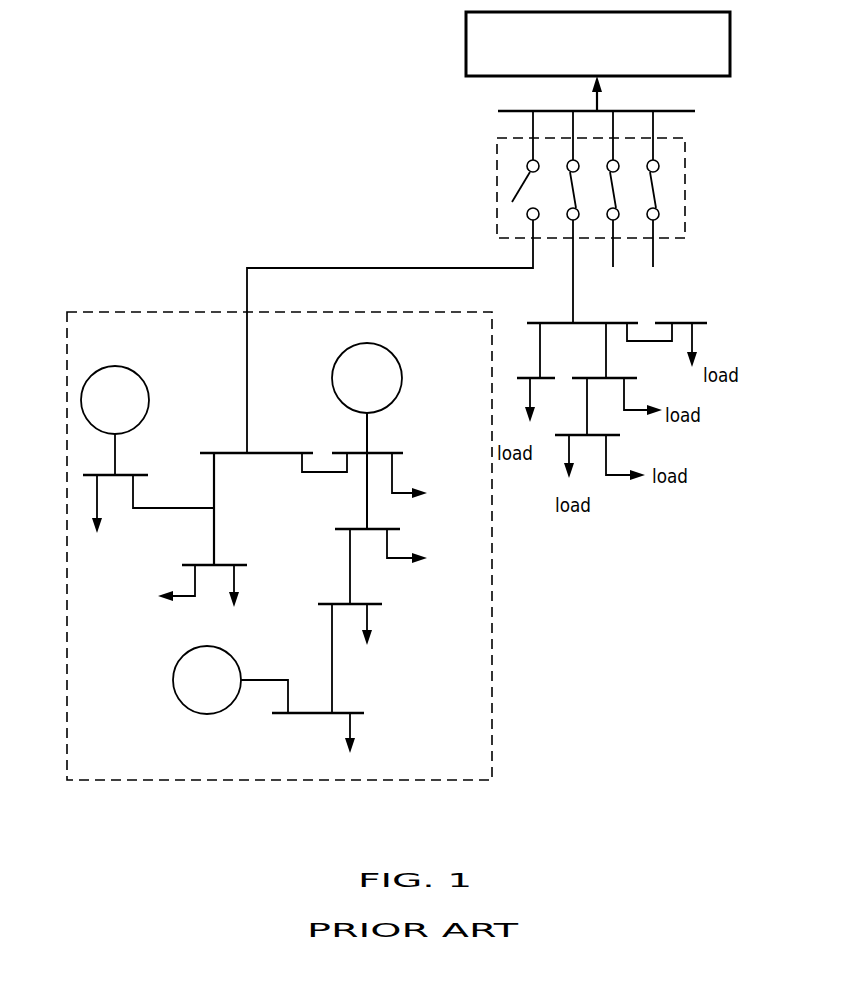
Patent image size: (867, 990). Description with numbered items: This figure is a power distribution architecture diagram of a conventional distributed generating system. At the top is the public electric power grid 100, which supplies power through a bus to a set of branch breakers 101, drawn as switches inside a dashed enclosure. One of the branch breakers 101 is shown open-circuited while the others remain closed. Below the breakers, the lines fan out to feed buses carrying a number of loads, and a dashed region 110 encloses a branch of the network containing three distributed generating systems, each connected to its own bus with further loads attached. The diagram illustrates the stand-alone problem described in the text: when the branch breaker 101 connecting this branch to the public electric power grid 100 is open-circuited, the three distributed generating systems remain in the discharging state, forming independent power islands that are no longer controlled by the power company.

The public electric power grid 100 is at (466, 40).
The branch breaker 101 is at (500, 185).
The microgrid 110 is at (208, 317).